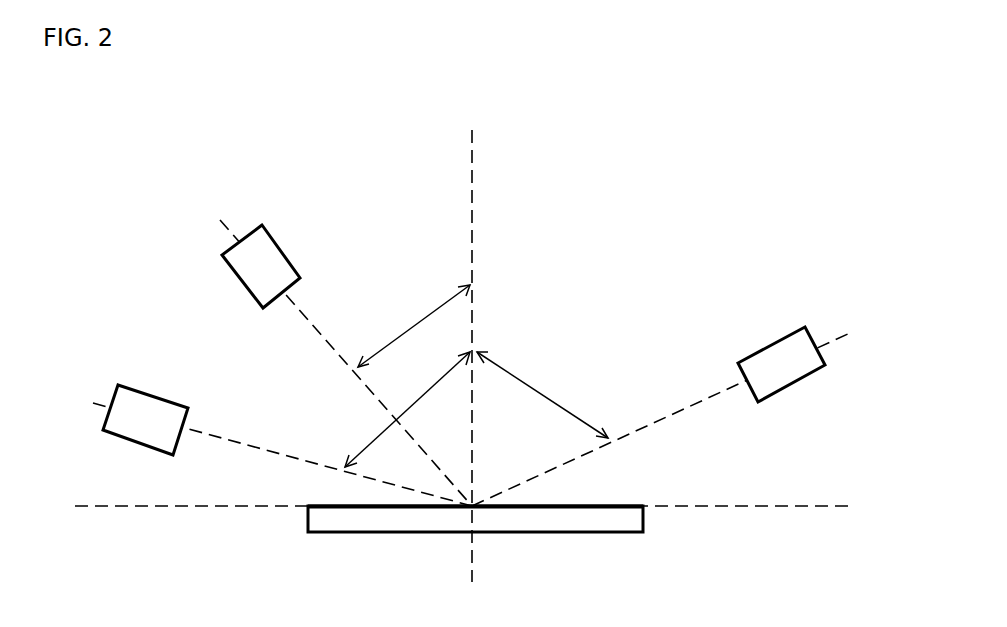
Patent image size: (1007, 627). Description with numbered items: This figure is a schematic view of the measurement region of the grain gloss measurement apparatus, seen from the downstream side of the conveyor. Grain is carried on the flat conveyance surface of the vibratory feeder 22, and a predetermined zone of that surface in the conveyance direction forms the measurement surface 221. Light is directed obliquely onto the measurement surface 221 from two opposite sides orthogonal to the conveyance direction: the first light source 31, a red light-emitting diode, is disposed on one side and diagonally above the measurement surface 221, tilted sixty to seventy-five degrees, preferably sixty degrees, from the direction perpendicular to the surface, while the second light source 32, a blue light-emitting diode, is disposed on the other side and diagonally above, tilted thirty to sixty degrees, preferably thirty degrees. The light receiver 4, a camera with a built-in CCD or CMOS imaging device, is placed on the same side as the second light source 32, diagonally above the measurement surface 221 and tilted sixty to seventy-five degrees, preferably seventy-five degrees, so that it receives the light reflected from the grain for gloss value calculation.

The vibratory feeder 22 is at (322, 521).
The measurement surface 221 is at (535, 503).
The first light source 31 is at (792, 357).
The second light source 32 is at (262, 258).
The light receiver 4 is at (141, 408).